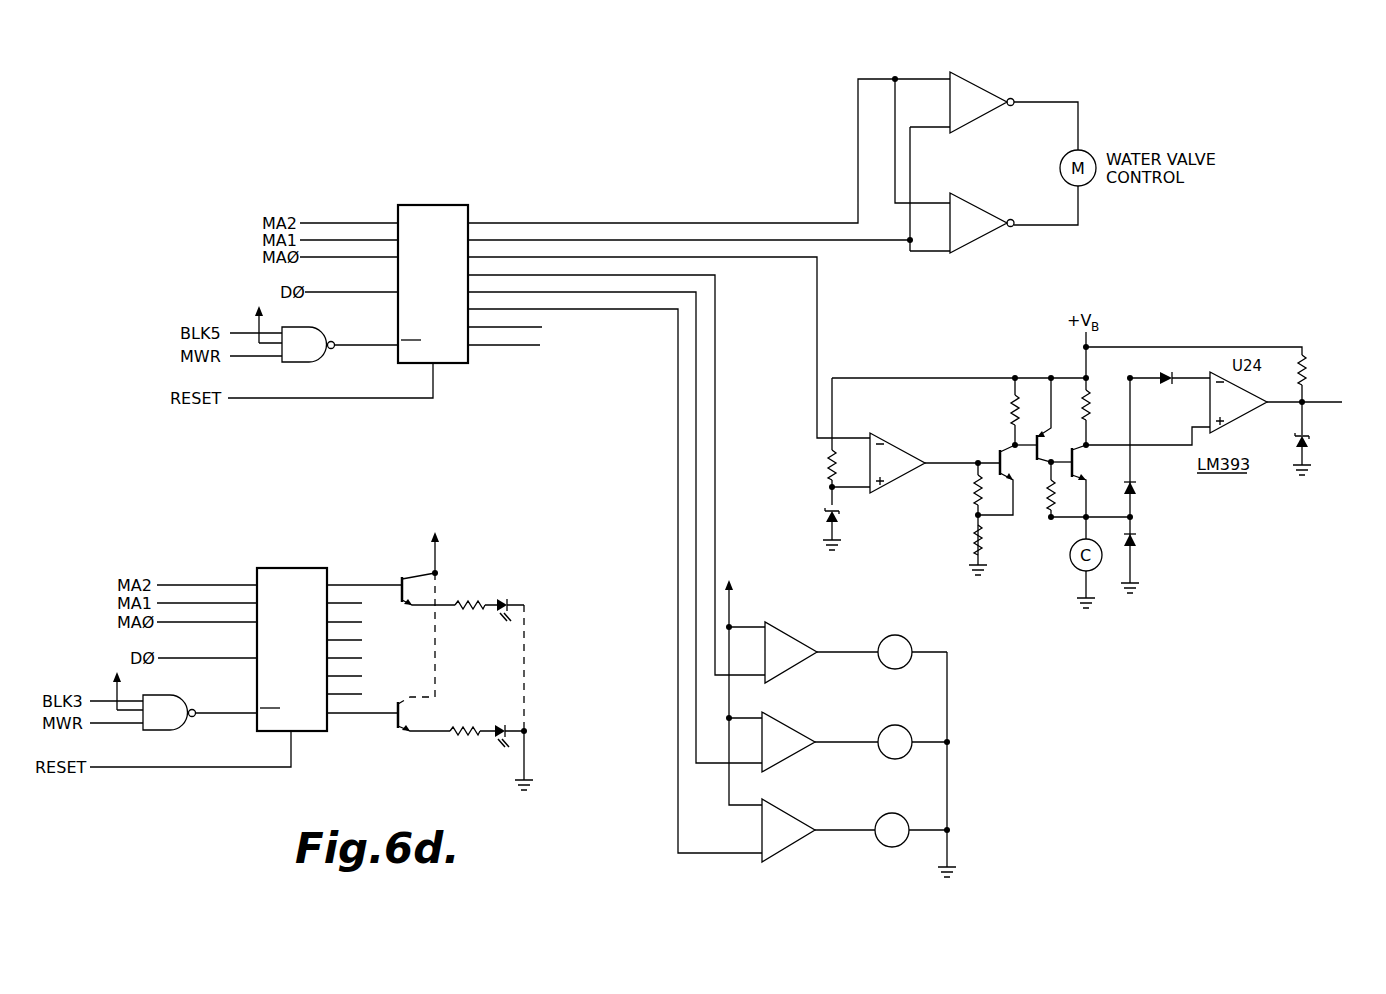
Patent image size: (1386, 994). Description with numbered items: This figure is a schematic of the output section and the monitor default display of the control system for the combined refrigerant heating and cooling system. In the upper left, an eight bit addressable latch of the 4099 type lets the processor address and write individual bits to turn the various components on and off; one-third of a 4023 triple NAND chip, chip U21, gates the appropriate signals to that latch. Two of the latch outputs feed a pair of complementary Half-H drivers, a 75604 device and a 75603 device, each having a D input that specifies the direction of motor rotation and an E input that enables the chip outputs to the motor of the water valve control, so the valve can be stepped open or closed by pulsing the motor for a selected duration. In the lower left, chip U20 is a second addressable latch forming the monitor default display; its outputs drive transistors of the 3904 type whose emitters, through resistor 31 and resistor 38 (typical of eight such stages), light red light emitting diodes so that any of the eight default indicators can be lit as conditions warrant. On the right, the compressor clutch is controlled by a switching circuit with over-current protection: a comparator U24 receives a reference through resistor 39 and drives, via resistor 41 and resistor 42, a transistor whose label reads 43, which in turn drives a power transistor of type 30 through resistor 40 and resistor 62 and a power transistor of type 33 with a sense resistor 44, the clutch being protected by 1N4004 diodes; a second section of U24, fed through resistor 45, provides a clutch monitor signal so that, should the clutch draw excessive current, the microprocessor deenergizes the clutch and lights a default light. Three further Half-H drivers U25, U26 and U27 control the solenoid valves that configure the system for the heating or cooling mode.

The U19 4099 addressable latch 4099 is at (452, 199).
The U21 4023 NAND gate 4023 is at (282, 345).
The U22 75604 driver 75604 is at (995, 63).
The U23 75603 driver 75603 is at (1010, 282).
The resistor R39 3.9K 39 is at (814, 464).
The resistor R40 270 40 is at (995, 411).
The resistor R41 4.7K 41 is at (964, 519).
The resistor R42 150 42 is at (999, 542).
The transistor / R43 43 is at (1007, 480).
The resistor R44 .033 5W 44 is at (1092, 399).
The resistor R45 2.2K 45 is at (1335, 409).
The transistor TIP30 30 is at (1026, 430).
The transistor TIP33 33 is at (1095, 468).
The resistor 62 is at (1062, 491).
The resistor R31 330 ohm 31 is at (506, 599).
The resistor R38 330R 38 is at (490, 749).
The transistor 2N3904 3904 is at (448, 631).
The diodes 1N4004 is at (1162, 485).
The addressable latch U20 is at (296, 646).
The gating chip U21 is at (188, 756).
The U24 LM393 comparator U24 is at (906, 425).
The Half-H driver U25 is at (828, 617).
The Half-H driver U26 is at (828, 707).
The Half-H driver U27 is at (828, 794).